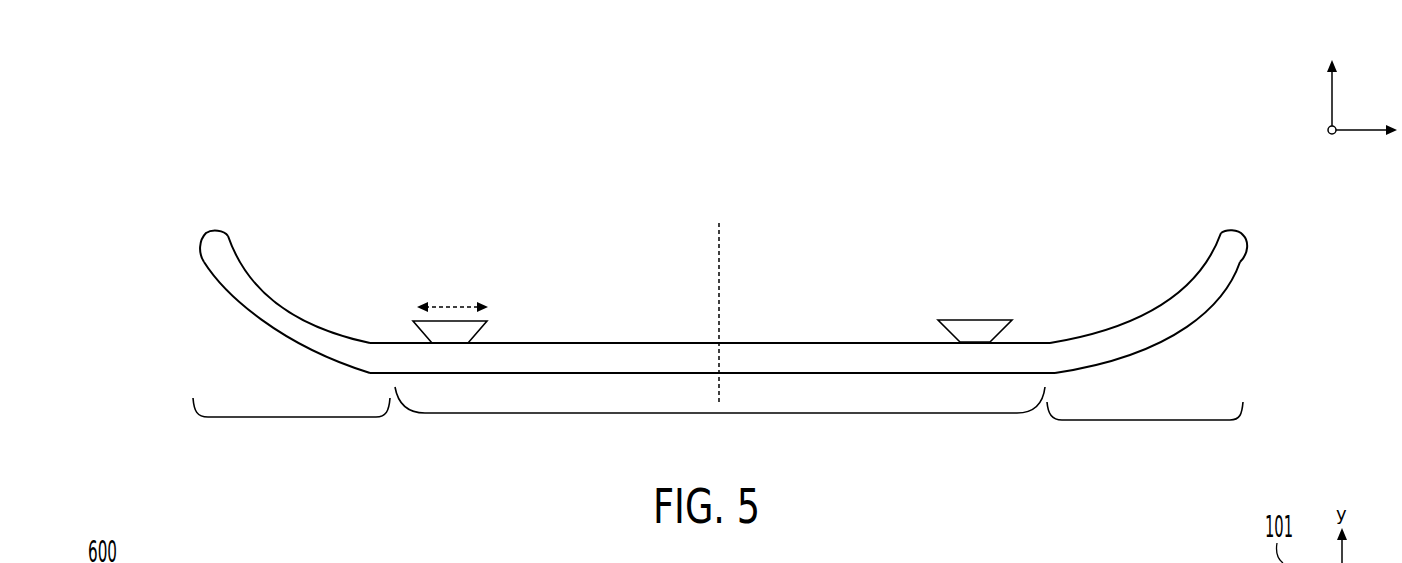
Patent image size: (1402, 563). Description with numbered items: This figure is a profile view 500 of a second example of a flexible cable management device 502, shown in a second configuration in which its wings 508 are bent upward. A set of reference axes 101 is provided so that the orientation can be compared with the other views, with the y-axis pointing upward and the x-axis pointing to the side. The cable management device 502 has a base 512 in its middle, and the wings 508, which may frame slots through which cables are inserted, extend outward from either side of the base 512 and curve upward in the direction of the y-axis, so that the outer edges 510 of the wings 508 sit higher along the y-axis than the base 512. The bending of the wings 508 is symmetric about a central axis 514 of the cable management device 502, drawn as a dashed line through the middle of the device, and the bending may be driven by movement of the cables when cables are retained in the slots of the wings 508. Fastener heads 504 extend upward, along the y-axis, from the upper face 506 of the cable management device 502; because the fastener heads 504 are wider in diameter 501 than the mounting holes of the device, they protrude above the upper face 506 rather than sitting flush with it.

The profile view 500 is at (128, 108).
The cable management device 502 is at (309, 188).
The outer edges 510 is at (206, 230).
The wings 508 is at (292, 417).
The upper face 506 is at (700, 340).
The base 512 is at (720, 413).
The fastener heads 504 is at (416, 328).
The diameter 501 is at (456, 302).
The central axis 514 is at (721, 242).
The reference axes 101 is at (1310, 112).